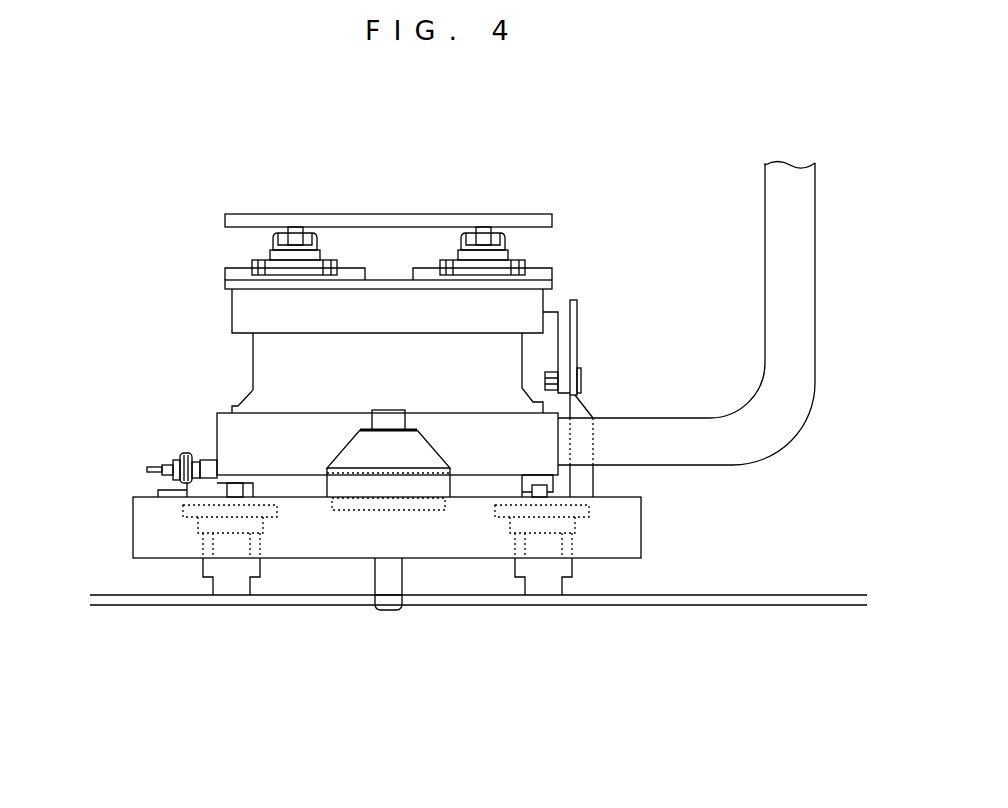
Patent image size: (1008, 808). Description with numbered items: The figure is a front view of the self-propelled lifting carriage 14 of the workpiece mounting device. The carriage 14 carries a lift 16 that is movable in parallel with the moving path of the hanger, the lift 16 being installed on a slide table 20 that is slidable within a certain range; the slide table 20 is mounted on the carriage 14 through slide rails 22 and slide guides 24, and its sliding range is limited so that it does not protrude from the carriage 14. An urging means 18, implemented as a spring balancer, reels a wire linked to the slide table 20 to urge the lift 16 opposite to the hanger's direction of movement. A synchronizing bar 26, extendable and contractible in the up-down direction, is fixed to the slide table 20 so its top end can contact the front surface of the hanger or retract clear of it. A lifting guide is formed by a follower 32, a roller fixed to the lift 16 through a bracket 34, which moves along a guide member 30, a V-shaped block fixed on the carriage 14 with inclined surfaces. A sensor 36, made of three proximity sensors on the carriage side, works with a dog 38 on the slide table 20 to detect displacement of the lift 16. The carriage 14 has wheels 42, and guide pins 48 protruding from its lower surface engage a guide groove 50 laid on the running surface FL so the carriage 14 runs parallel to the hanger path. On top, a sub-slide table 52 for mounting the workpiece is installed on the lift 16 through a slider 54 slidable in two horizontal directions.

The self-propelled lifting carriage 14 is at (133, 533).
The lift 16 is at (232, 301).
The urging means 18 is at (352, 453).
The slide table 20 is at (232, 406).
The slide rails 22 is at (537, 492).
The slide guides 24 is at (513, 482).
The synchronizing bar 26 is at (793, 250).
The guide member 30 is at (587, 417).
The follower 32 is at (580, 377).
The bracket 34 is at (577, 300).
The sensor 36 is at (182, 458).
The dog 38 is at (206, 460).
The wheels 42 is at (553, 588).
The guide pins 48 is at (385, 613).
The guide groove 50 is at (387, 593).
The sub-slide table 52 is at (365, 213).
The slider 54 is at (262, 247).
The running surface FL is at (823, 594).